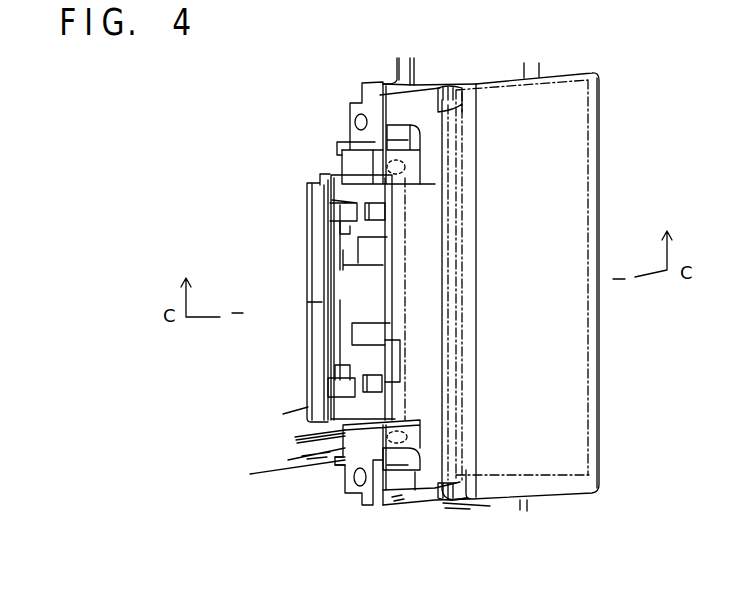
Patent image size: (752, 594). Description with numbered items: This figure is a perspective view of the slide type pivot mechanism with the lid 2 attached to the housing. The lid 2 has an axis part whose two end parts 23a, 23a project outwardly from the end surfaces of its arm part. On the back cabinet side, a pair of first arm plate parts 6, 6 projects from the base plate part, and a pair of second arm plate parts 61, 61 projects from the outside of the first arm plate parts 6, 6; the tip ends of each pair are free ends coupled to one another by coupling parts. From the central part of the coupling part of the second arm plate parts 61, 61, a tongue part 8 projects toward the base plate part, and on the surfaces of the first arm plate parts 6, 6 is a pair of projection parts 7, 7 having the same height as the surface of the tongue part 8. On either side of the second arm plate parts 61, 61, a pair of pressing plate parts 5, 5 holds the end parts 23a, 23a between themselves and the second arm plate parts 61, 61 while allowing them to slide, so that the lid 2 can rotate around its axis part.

The lid 2 is at (582, 318).
The end part of the axis part 23a is at (376, 108).
The pressing plate part 5 is at (355, 164).
The second arm plate part 61 is at (343, 206).
The tongue part 8 is at (357, 306).
The first arm plate part 6 is at (358, 238).
The projection part 7 is at (381, 198).